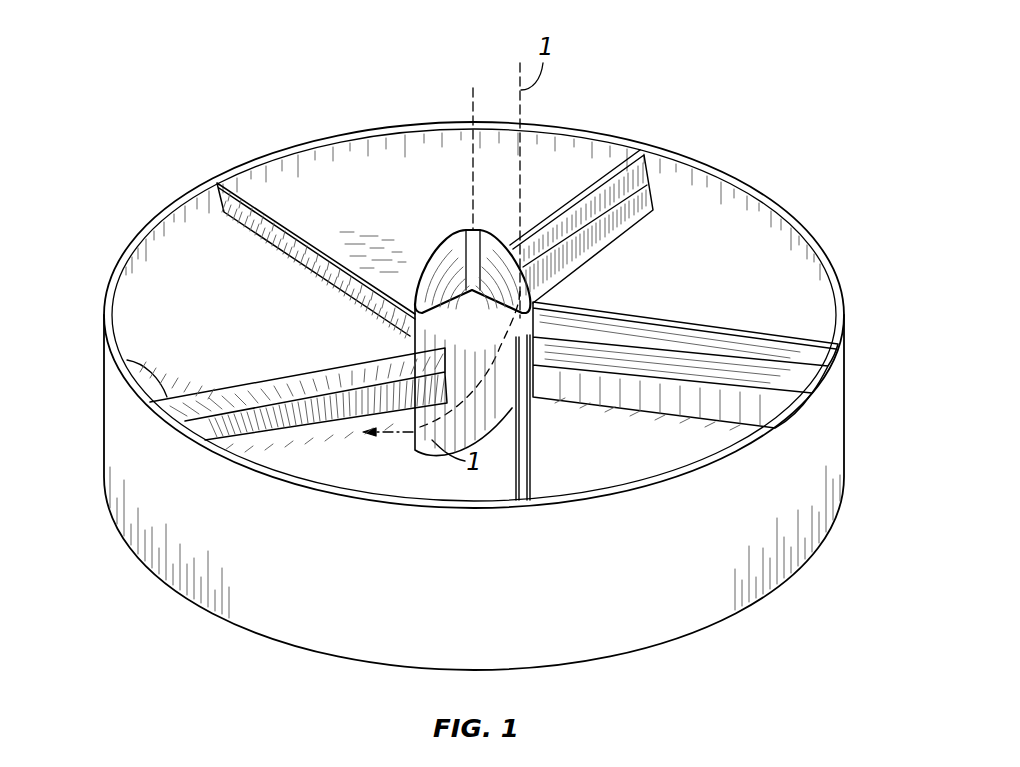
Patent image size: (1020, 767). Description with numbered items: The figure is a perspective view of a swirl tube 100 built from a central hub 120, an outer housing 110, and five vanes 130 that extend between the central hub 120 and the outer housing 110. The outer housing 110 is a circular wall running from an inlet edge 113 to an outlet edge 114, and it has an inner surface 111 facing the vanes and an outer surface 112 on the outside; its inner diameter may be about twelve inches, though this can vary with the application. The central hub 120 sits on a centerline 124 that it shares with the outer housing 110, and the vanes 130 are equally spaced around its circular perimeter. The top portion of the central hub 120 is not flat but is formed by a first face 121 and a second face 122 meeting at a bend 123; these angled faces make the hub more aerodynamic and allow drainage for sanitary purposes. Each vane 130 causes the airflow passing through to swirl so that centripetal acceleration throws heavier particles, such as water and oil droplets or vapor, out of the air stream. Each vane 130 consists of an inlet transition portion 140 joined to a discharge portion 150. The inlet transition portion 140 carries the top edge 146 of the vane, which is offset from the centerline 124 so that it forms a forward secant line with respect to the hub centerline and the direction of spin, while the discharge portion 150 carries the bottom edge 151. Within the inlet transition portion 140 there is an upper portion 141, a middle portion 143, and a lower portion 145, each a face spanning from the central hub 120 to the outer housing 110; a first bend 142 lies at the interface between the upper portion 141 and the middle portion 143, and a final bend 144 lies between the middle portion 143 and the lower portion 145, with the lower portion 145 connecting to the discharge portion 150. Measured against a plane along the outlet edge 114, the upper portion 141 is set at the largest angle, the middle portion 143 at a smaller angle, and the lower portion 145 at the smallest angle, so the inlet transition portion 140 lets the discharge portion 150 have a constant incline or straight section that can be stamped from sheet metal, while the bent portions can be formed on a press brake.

The swirl tube 100 is at (121, 101).
The outer housing 110 is at (834, 433).
The inner surface 111 is at (228, 269).
The outer surface 112 is at (372, 647).
The inlet edge 113 is at (190, 196).
The outlet edge 114 is at (132, 549).
The central hub 120 is at (410, 268).
The first face 121 is at (428, 276).
The second face 122 is at (493, 265).
The bend 123 is at (470, 231).
The centerline 124 is at (473, 110).
The vanes 130 is at (327, 226).
The inlet transition portion 140 is at (674, 259).
The upper portion 141 is at (597, 193).
The first bend 142 is at (575, 226).
The middle portion 143 is at (593, 243).
The final bend 144 is at (577, 273).
The lower portion 145 is at (645, 249).
The top edge 146 is at (130, 357).
The discharge portion 150 is at (763, 312).
The bottom edge 151 is at (270, 440).